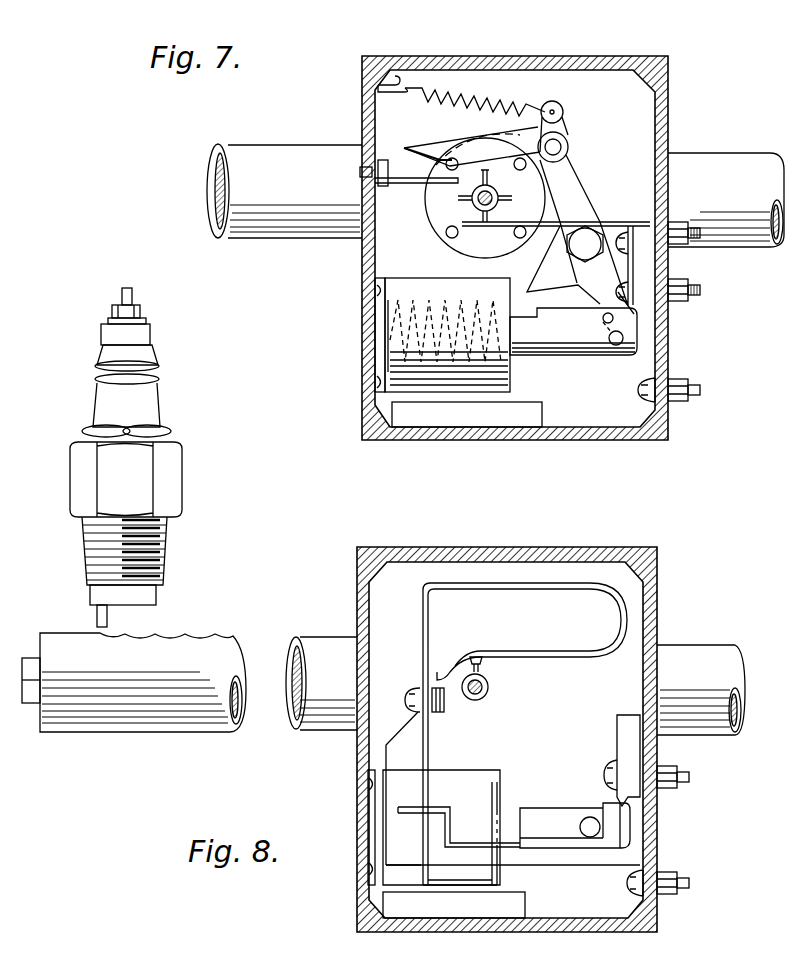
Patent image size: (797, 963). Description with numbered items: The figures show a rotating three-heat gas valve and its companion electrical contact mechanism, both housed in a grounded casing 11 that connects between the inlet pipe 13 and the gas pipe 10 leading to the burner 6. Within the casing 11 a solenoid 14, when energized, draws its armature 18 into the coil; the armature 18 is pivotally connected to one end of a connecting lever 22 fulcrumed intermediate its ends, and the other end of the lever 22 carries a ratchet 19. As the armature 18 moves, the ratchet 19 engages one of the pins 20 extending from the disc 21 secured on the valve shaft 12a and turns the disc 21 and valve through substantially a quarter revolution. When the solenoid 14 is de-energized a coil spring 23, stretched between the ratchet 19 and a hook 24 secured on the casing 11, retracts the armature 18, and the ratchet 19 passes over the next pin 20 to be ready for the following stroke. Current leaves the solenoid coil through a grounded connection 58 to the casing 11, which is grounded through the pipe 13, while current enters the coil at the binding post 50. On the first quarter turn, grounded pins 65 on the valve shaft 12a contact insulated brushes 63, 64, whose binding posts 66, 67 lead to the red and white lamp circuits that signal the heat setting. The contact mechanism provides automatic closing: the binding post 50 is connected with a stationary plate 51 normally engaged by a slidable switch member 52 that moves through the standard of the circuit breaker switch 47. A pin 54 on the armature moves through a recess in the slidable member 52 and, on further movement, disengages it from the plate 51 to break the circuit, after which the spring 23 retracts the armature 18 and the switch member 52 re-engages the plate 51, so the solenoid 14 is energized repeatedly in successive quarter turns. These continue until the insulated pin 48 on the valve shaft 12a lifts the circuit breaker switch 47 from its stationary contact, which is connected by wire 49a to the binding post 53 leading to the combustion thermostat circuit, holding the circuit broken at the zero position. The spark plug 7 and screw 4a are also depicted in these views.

In FIG. 8, the screw 4a is at (442, 712).
In FIG. 8, the burner 6 is at (175, 710).
In FIG. 8, the spark plug 7 is at (150, 478).
In FIG. 7, the gas pipe 10 is at (262, 225).
In FIG. 8, the gas pipe 10 is at (321, 683).
In FIG. 7, the casing 11 is at (670, 108).
In FIG. 8, the casing 11 is at (520, 548).
In FIG. 7, the valve shaft 12a is at (472, 200).
In FIG. 8, the valve shaft 12a is at (482, 697).
In FIG. 7, the inlet pipe 13 is at (722, 162).
In FIG. 8, the inlet pipe 13 is at (692, 655).
In FIG. 7, the solenoid 14 is at (405, 292).
In FIG. 8, the solenoid 14 is at (380, 818).
In FIG. 7, the armature 18 is at (580, 352).
In FIG. 8, the armature 18 is at (532, 812).
In FIG. 7, the ratchet 19 is at (432, 152).
In FIG. 7, the pins 20 is at (447, 232).
In FIG. 7, the disc 21 is at (466, 240).
In FIG. 7, the connecting lever 22 is at (580, 225).
In FIG. 7, the coil spring 23 is at (458, 94).
In FIG. 7, the hook 24 is at (387, 78).
In FIG. 8, the circuit breaker switch 47 is at (549, 653).
In FIG. 8, the insulated pin 48 is at (484, 670).
In FIG. 8, the wire 49a is at (393, 742).
In FIG. 7, the binding post 50 is at (690, 296).
In FIG. 8, the binding post 50 is at (680, 786).
In FIG. 8, the stationary plate 51 is at (622, 795).
In FIG. 8, the slidable switch member 52 is at (553, 845).
In FIG. 8, the binding post 53 is at (680, 895).
In FIG. 8, the pin 54 is at (585, 822).
In FIG. 7, the grounded connection 58 is at (375, 278).
In FIG. 7, the insulated brush 63 is at (412, 152).
In FIG. 7, the insulated brush 64 is at (600, 228).
In FIG. 7, the pins 65 is at (500, 200).
In FIG. 7, the binding post 66 is at (368, 160).
In FIG. 7, the binding post 67 is at (690, 245).